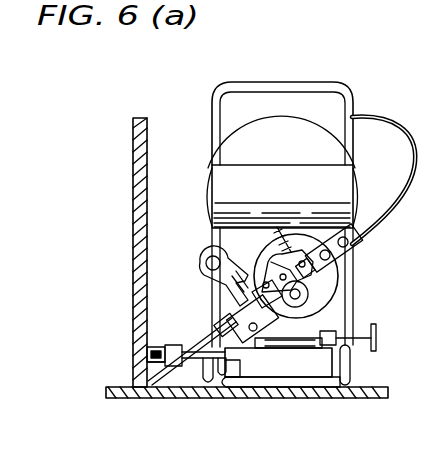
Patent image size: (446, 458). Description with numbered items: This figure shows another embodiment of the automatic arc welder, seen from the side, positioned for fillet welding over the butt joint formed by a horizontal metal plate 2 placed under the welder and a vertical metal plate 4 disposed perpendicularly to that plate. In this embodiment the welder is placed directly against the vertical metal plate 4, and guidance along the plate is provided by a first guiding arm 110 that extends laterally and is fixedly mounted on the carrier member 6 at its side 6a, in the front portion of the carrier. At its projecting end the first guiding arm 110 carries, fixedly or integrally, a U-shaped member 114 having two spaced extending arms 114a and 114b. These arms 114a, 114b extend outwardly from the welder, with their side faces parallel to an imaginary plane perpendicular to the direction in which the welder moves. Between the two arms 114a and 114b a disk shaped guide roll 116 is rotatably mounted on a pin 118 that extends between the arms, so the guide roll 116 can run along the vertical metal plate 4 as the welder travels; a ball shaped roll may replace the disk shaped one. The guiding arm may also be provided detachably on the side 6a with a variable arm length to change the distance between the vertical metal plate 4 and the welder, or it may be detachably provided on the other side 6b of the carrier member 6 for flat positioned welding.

The vertical metal plate 4 is at (133, 172).
The horizontal metal plate 2 is at (281, 378).
The carrier member 6 is at (305, 380).
The side of carrier member 6a is at (228, 398).
The other side of carrier member 6b is at (342, 395).
The first guiding arm 110 is at (200, 400).
The U-shaped member 114 is at (174, 348).
The extending arm 114a is at (150, 350).
The extending arm 114b is at (160, 400).
The guide roll 116 is at (150, 356).
The pin 118 is at (150, 361).